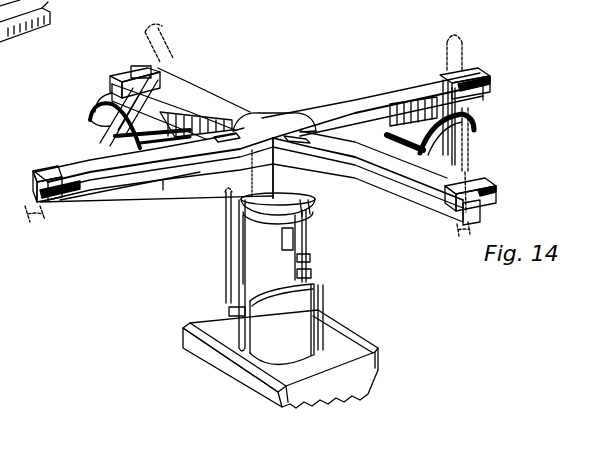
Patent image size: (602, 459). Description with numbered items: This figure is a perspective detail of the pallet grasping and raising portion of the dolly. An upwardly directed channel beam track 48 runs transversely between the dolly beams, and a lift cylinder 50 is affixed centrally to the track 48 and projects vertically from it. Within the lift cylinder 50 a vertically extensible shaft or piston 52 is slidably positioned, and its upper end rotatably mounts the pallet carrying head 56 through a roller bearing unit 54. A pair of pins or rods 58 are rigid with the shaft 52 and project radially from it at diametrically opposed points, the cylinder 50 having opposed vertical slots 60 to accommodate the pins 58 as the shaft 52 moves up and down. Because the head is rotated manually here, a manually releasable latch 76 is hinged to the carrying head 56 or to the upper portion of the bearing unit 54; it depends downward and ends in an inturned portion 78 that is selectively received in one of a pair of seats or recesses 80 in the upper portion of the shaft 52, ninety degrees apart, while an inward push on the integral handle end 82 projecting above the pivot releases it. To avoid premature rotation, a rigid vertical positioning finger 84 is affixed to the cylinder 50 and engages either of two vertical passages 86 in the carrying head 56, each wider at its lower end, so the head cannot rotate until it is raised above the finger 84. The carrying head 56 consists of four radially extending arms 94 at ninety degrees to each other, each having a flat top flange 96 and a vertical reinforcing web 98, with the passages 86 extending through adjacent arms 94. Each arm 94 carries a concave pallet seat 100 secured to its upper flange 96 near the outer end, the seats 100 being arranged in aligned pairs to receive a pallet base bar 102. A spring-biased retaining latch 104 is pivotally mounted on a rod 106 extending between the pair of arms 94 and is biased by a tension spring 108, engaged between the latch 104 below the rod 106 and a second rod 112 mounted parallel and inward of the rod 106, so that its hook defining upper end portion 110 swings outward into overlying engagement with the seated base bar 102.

The channel beam track 48 is at (378, 362).
The lift cylinder 50 is at (316, 306).
The extensible shaft or piston 52 is at (313, 273).
The roller bearing unit 54 is at (258, 222).
The pallet carrying head 56 is at (328, 98).
The pins or rods 58 is at (228, 312).
The vertical slots 60 is at (248, 320).
The manually releasable latch 76 is at (310, 223).
The inturned portion 78 is at (296, 246).
The seats or recesses 80 is at (311, 258).
The handle end 82 is at (310, 204).
The retaining or positioning finger 84 is at (222, 218).
The vertical passages 86 is at (302, 122).
The radially extending arms 94 is at (129, 202).
The flat top flange 96 is at (62, 196).
The vertical reinforcing web 98 is at (163, 186).
The concave pallet seat 100 is at (40, 166).
The pallet base bar 102 is at (152, 52).
The spring-biased retaining latch 104 is at (106, 104).
The rod 106 is at (127, 110).
The tension spring 108 is at (135, 115).
The hook defining upper end portion 110 is at (92, 112).
The second rod 112 is at (198, 110).